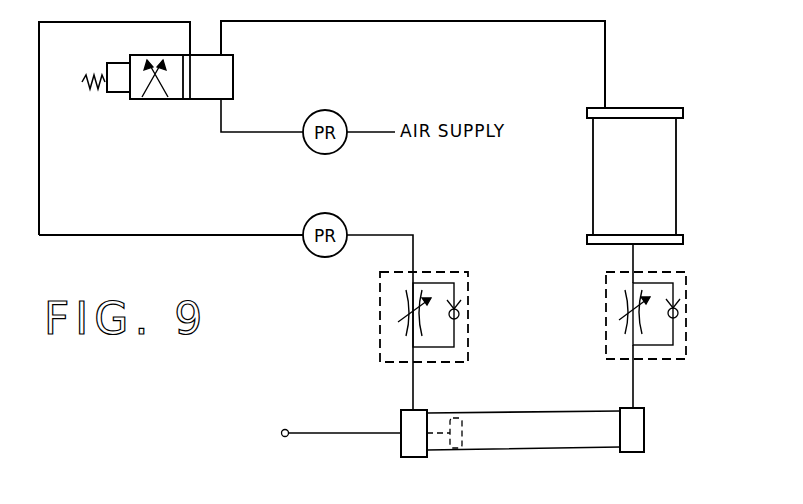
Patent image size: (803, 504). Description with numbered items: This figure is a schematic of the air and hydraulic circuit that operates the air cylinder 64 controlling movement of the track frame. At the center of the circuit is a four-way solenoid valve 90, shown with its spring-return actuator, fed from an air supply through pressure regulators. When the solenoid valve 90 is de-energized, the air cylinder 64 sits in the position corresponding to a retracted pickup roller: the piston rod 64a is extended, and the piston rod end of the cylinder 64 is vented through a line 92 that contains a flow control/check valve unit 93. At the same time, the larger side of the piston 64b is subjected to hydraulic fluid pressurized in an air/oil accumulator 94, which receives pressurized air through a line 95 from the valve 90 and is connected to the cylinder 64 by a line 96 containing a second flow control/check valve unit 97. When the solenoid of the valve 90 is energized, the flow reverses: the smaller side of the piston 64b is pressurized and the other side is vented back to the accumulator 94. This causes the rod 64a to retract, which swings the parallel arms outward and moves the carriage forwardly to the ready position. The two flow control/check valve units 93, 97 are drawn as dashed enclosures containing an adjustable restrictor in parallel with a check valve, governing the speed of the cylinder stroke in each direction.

The four-way solenoid valve 90 is at (233, 79).
The line 92 is at (413, 243).
The flow control/check valve unit 93 is at (380, 302).
The air/oil accumulator 94 is at (677, 181).
The line 95 is at (605, 66).
The line 96 is at (633, 392).
The flow control/check valve unit 97 is at (686, 307).
The air cylinder 64 is at (540, 411).
The piston rod 64a is at (327, 435).
The piston 64b is at (456, 450).